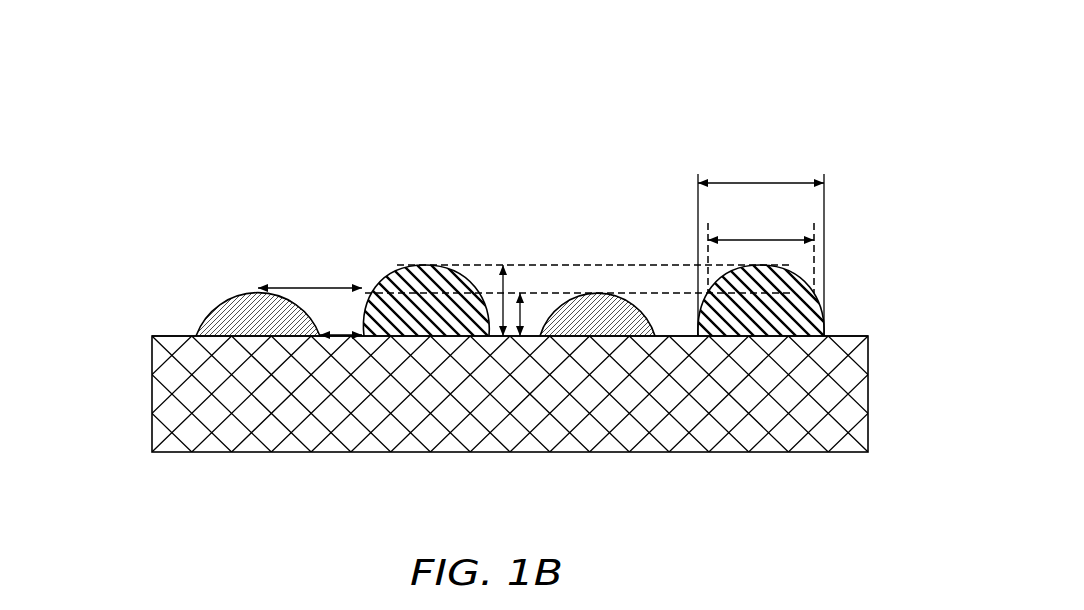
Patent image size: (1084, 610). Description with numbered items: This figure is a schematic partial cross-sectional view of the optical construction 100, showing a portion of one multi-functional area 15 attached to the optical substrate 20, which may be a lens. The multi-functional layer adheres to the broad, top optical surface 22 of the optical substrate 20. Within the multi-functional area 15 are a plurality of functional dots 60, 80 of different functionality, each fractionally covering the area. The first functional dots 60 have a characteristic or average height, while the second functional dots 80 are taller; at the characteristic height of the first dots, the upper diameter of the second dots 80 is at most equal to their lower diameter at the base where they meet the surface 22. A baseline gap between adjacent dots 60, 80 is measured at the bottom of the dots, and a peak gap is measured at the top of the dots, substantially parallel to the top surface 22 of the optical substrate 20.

The optical construction 100 is at (818, 122).
The multi-functional area 15 is at (172, 305).
The optical substrate 20 is at (834, 452).
The optical surface 22 is at (868, 334).
The first functional dots 60 is at (222, 295).
The second functional dots 80 is at (397, 268).